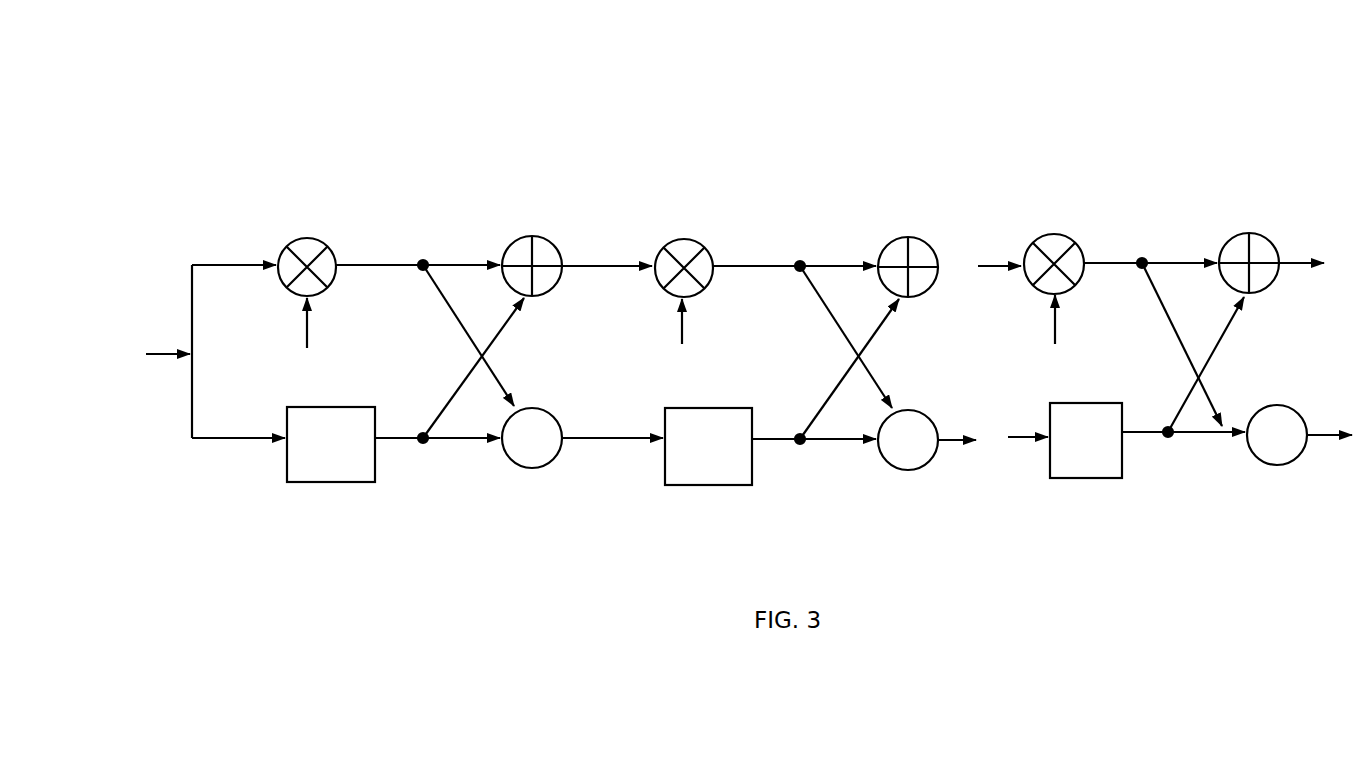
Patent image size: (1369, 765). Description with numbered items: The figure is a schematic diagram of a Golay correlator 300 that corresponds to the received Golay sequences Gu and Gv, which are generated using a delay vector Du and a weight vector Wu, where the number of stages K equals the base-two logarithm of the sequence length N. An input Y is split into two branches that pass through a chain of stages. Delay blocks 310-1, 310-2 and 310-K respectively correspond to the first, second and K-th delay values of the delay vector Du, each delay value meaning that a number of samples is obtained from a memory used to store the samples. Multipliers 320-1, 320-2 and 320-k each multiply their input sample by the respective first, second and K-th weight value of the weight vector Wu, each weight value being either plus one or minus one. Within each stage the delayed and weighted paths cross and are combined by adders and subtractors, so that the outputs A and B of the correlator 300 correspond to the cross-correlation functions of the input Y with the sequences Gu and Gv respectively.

The Golay correlator 300 is at (968, 98).
The multiplier 320-1 is at (293, 238).
The multiplier 320-2 is at (670, 240).
The multiplier 320-k is at (1040, 233).
The delay block 310-1 is at (348, 407).
The delay block 310-2 is at (727, 408).
The delay block 310-K is at (1097, 403).